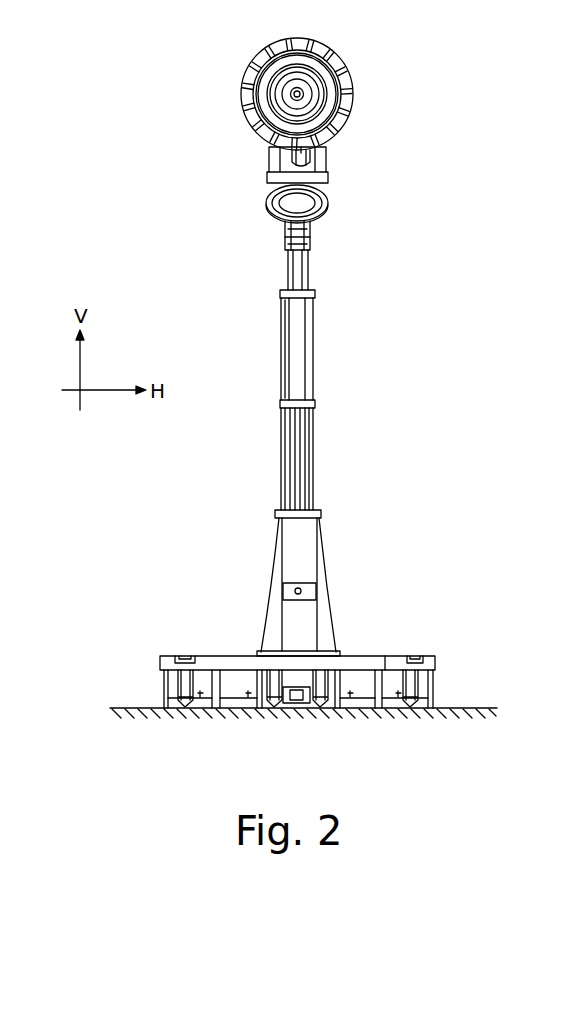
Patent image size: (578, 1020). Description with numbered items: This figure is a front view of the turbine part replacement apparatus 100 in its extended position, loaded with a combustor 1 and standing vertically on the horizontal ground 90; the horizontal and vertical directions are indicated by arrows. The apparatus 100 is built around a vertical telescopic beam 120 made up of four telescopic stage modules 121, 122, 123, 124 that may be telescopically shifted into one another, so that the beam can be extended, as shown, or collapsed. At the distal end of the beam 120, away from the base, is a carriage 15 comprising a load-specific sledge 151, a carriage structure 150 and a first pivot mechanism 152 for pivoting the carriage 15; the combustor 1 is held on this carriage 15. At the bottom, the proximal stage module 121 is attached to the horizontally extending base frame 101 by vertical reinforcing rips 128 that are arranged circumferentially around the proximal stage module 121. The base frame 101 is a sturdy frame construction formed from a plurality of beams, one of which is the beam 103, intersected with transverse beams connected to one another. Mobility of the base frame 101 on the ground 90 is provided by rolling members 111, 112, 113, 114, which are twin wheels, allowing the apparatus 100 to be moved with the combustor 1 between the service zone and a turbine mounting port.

The turbine part replacement apparatus 100 is at (198, 90).
The combustor 1 is at (353, 104).
The carriage 15 is at (374, 198).
The load-specific sledge 151 is at (329, 158).
The carriage structure 150 is at (330, 183).
The first pivot mechanism 152 is at (326, 205).
The vertical telescopic beam 120 is at (325, 453).
The telescopic stage module 124 is at (310, 270).
The telescopic stage module 123 is at (312, 332).
The telescopic stage module 122 is at (316, 408).
The proximal stage module 121 is at (288, 546).
The vertical reinforcing rips 128 is at (266, 602).
The base frame 101 is at (351, 685).
The beam 103 is at (386, 660).
The rolling member 111 is at (429, 712).
The rolling member 112 is at (200, 712).
The rolling member 113 is at (333, 712).
The rolling member 114 is at (288, 712).
The horizontal ground 90 is at (127, 707).